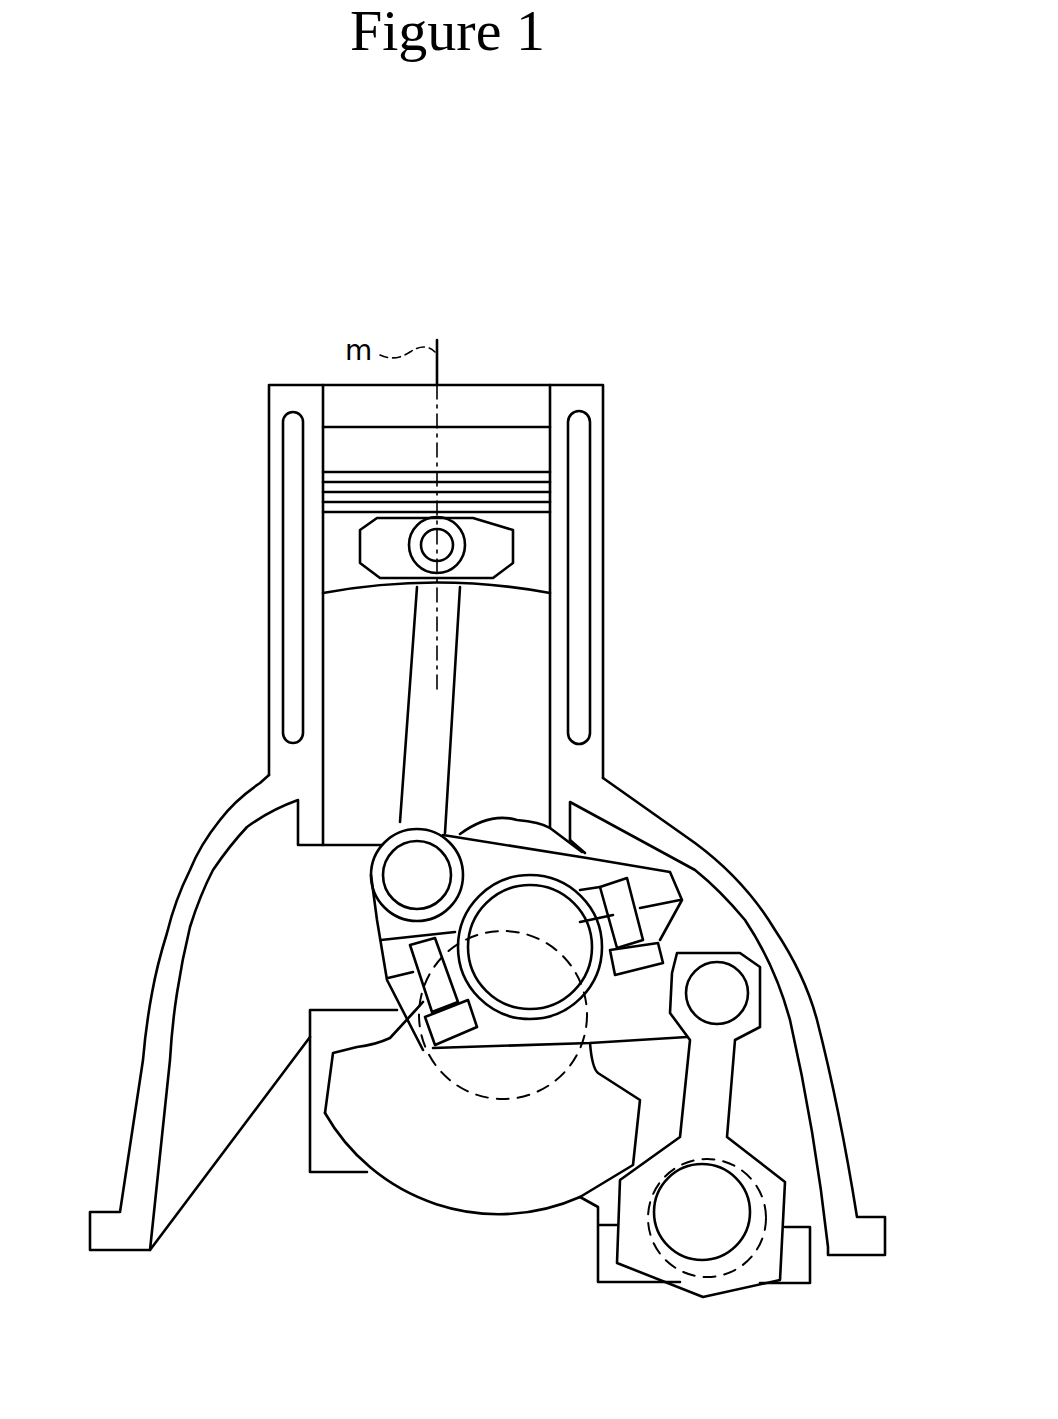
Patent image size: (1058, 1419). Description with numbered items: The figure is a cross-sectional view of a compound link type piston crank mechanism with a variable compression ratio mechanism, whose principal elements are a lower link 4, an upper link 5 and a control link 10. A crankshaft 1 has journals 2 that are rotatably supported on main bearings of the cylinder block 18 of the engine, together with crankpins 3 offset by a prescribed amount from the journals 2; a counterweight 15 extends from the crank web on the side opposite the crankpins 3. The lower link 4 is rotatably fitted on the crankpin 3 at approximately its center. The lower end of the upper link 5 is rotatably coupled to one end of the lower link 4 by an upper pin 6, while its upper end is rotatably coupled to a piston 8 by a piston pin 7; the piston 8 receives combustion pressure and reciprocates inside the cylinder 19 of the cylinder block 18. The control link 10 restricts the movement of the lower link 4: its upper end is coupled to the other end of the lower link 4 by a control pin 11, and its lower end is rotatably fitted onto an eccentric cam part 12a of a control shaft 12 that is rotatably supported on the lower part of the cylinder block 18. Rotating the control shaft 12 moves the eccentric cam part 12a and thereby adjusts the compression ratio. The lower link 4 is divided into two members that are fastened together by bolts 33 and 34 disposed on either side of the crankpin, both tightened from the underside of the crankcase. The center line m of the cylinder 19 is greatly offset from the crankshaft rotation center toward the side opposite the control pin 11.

The crankshaft 1 is at (438, 1236).
The journal 2 is at (422, 1090).
The crankpin 3 is at (555, 912).
The lower link 4 is at (500, 862).
The upper link 5 is at (445, 658).
The upper pin 6 is at (408, 878).
The piston pin 7 is at (448, 547).
The piston 8 is at (533, 570).
The control link 10 is at (720, 1088).
The control pin 11 is at (727, 993).
The control shaft 12 is at (755, 1280).
The eccentric cam part 12a is at (723, 1200).
The counterweight 15 is at (540, 1195).
The cylinder block 18 is at (152, 1040).
The cylinder 19 is at (330, 657).
The bolt 33 is at (430, 1040).
The bolt 34 is at (653, 958).